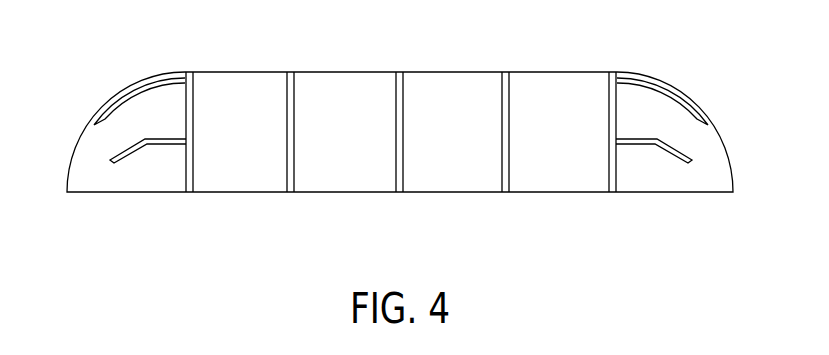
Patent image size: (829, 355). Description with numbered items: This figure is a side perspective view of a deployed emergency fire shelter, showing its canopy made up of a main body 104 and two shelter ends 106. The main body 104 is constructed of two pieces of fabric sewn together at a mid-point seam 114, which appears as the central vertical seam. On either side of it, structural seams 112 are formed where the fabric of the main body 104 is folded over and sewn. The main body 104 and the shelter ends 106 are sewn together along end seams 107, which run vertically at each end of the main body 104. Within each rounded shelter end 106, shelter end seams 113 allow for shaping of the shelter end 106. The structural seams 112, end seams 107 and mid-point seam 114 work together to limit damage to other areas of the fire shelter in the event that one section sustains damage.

The main body 104 is at (442, 103).
The shelter end 106 is at (682, 127).
The end seam 107 is at (198, 122).
The structural seam 112 is at (291, 71).
The shelter end seam 113 is at (636, 128).
The mid-point seam 114 is at (390, 120).